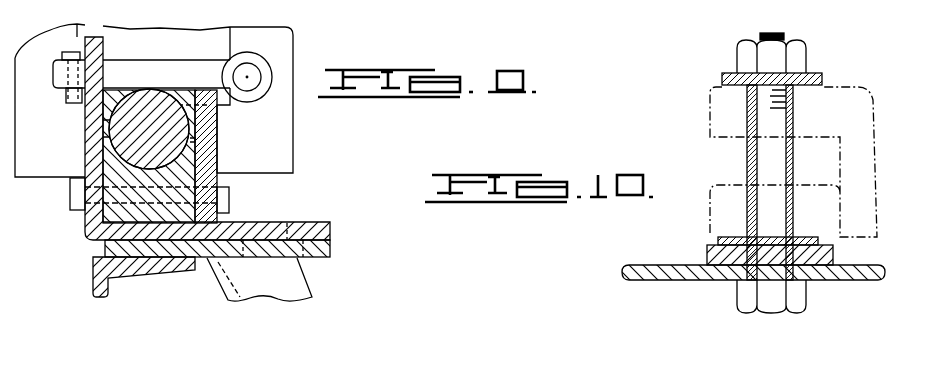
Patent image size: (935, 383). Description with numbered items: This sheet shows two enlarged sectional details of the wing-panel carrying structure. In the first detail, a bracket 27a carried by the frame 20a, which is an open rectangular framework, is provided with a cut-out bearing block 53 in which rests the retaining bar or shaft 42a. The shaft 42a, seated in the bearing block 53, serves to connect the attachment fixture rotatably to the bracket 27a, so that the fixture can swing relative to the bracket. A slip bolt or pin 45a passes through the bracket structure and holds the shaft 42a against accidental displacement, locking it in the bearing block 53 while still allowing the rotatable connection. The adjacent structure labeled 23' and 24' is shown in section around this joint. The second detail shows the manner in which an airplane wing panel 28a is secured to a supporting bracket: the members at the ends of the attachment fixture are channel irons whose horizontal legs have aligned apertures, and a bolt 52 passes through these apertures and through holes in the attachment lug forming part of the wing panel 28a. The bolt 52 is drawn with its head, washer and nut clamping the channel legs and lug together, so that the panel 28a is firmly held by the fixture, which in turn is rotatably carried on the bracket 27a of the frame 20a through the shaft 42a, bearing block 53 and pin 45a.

In FIG. 9, the side member 23' is at (154, 89).
In FIG. 9, the slip bolt 45a is at (132, 63).
In FIG. 9, the retaining bar or shaft 42a is at (102, 124).
In FIG. 9, the cut-out bearing block 53 is at (185, 162).
In FIG. 9, the bracket 27a is at (298, 283).
In FIG. 9, the frame 20a is at (432, 1).
In FIG. 10, the cross member 24' is at (558, 13).
In FIG. 10, the bolt 52 is at (768, 152).
In FIG. 10, the wing panel 28a is at (852, 110).